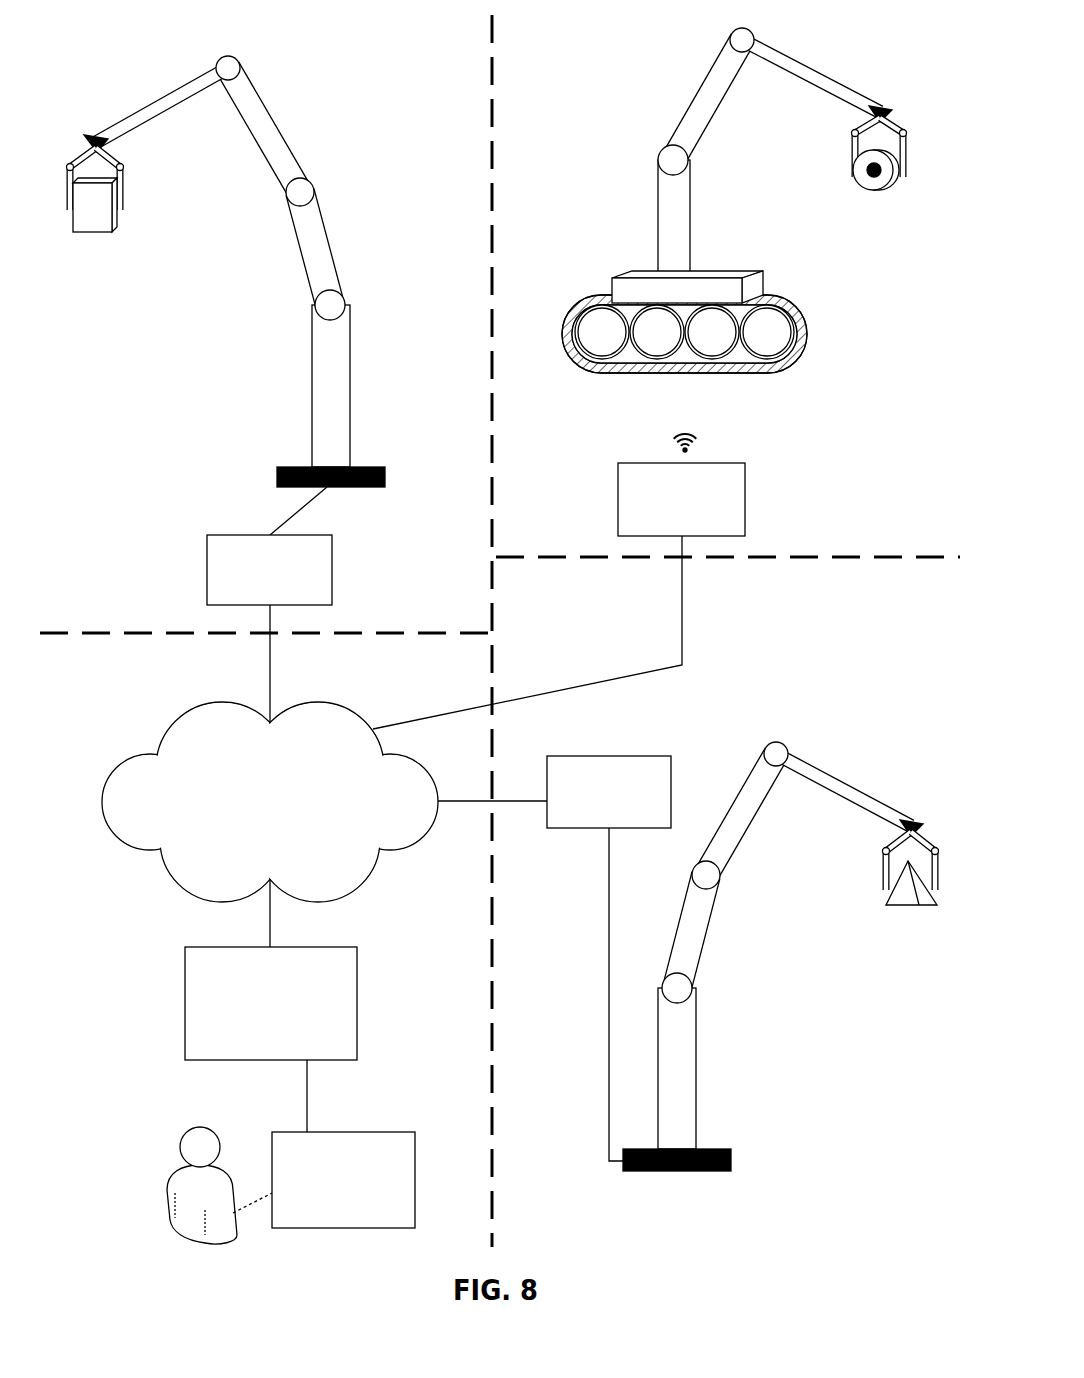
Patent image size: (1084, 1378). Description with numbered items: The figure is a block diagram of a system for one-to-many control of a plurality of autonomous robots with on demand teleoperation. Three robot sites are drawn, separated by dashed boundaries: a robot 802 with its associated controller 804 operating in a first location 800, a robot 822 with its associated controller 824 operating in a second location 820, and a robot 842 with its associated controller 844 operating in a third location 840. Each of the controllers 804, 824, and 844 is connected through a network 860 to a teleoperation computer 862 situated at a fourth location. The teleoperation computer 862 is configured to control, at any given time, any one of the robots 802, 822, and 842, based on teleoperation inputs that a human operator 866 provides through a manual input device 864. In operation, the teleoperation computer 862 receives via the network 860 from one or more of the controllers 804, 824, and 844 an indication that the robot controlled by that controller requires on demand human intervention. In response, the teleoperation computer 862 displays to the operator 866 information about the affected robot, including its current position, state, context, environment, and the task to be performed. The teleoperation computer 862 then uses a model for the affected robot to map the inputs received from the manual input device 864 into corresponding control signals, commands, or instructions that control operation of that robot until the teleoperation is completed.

The first location 800 is at (147, 72).
The robot 802 is at (270, 118).
The controller 804 is at (207, 558).
The second location 820 is at (612, 88).
The robot 822 is at (658, 207).
The controller 824 is at (745, 498).
The third location 840 is at (828, 657).
The robot 842 is at (696, 1072).
The controller 844 is at (648, 756).
The network 860 is at (175, 718).
The teleoperation computer 862 is at (185, 983).
The manual input device 864 is at (342, 1228).
The human operator 866 is at (167, 1190).